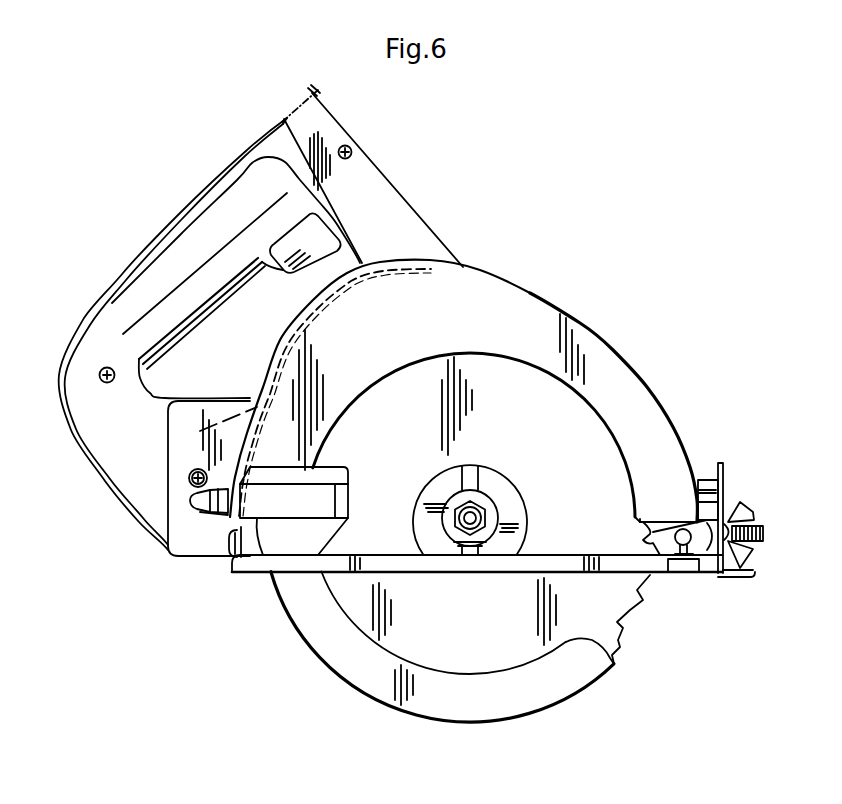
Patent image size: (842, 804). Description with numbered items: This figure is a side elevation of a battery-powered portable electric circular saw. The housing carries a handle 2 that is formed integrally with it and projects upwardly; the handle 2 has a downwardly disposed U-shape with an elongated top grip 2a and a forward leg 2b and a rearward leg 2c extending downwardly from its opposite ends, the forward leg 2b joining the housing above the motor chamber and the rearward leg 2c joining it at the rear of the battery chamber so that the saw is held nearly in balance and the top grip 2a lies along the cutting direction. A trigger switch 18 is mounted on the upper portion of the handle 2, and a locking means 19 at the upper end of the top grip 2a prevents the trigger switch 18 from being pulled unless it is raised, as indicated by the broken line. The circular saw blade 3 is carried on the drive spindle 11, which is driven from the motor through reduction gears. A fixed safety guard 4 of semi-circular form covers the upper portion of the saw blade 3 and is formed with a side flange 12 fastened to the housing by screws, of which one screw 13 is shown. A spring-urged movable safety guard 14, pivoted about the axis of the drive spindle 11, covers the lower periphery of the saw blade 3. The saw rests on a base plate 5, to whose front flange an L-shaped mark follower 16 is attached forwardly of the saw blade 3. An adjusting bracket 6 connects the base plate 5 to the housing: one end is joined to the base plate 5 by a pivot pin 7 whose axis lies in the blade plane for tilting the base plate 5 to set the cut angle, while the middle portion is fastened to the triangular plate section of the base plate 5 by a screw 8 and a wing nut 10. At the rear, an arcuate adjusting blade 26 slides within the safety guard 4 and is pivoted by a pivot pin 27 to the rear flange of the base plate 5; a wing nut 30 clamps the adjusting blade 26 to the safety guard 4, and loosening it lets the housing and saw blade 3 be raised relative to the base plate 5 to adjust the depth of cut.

The handle 2 is at (119, 263).
The top grip 2a is at (163, 262).
The forward leg 2b is at (350, 173).
The rearward leg 2c is at (110, 410).
The circular saw blade 3 is at (603, 597).
The fixed safety guard 4 is at (538, 316).
The base plate 5 is at (548, 568).
The adjusting bracket 6 is at (706, 485).
The pivot pin 7 is at (714, 525).
The screw 8 is at (765, 536).
The wing nut 10 is at (742, 514).
The drive spindle 11 is at (453, 527).
The side flange 12 is at (183, 462).
The screw 13 is at (191, 486).
The movable safety guard 14 is at (342, 667).
The mark follower 16 is at (756, 577).
The trigger switch 18 is at (313, 233).
The locking means 19 is at (283, 118).
The adjusting blade 26 is at (200, 431).
The pivot pin 27 is at (227, 547).
The wing nut 30 is at (213, 512).